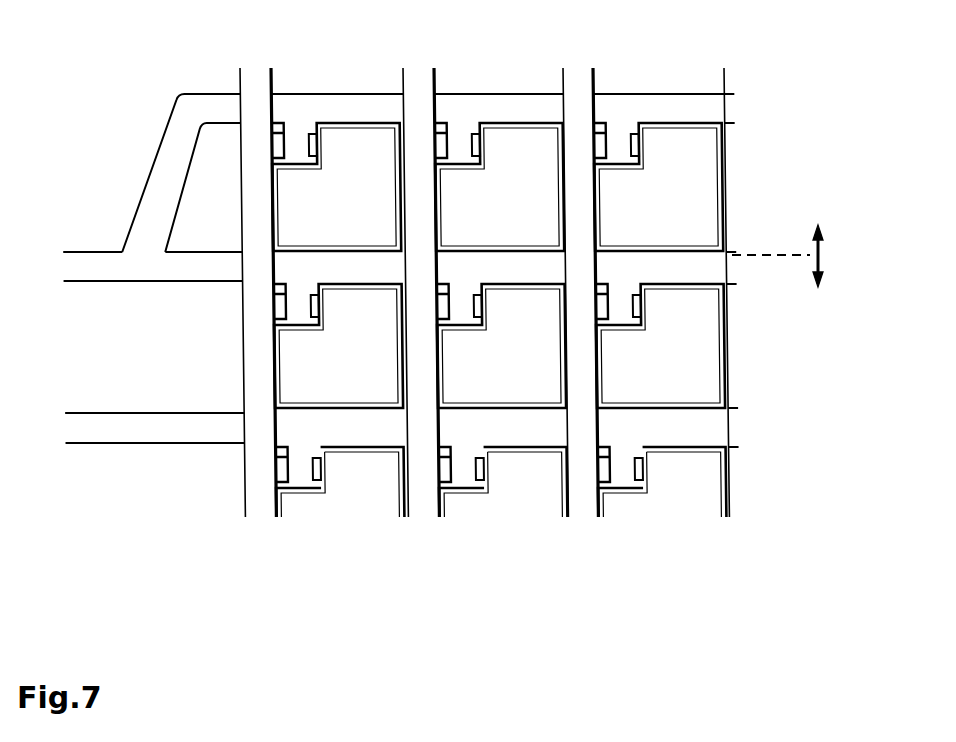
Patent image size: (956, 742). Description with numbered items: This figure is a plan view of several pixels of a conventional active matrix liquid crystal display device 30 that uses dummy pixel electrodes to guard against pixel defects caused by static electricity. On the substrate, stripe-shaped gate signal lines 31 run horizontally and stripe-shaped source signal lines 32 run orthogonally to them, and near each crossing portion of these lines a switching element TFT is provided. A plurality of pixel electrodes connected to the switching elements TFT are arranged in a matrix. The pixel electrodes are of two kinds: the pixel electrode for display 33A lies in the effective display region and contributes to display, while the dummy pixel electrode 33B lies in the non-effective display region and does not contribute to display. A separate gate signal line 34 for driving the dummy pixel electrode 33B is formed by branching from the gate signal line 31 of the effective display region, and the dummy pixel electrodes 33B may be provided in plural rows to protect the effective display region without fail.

The active matrix liquid crystal display device 30 is at (106, 48).
The gate signal line 31 is at (162, 426).
The source signal line 32 is at (263, 498).
The gate signal line for driving the dummy pixel electrode 34 is at (328, 112).
The pixel electrode for display 33A is at (391, 390).
The dummy pixel electrode 33B is at (391, 160).
The switching element TFT is at (296, 305).